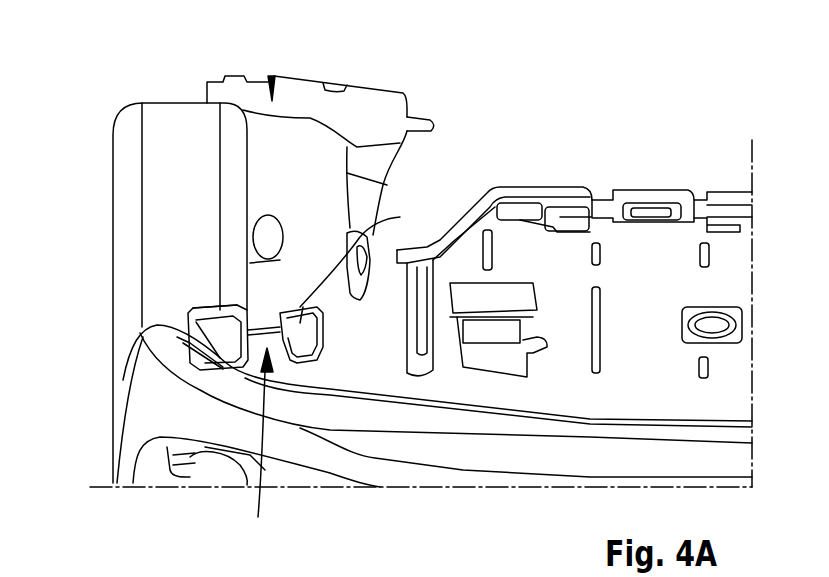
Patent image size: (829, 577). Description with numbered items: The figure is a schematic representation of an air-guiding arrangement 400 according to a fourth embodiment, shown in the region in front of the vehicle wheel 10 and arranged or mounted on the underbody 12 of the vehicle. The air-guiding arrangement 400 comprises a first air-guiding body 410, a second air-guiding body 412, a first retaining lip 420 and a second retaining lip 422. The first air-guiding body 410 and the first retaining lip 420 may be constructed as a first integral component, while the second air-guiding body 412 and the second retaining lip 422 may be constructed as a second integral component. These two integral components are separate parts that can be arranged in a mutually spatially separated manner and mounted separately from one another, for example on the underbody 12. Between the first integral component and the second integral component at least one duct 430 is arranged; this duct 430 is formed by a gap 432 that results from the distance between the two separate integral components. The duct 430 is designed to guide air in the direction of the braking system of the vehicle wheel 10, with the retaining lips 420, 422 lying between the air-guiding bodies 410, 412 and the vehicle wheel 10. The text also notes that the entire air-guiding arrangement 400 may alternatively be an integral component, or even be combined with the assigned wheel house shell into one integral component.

The vehicle wheel 10 is at (141, 103).
The underbody 12 is at (703, 303).
The air-guiding arrangement 400 is at (206, 207).
The first air-guiding body 410 is at (215, 333).
The second air-guiding body 412 is at (372, 240).
The first retaining lip 420 is at (197, 301).
The second retaining lip 422 is at (287, 312).
The duct 430 is at (254, 450).
The gap 432 is at (258, 323).